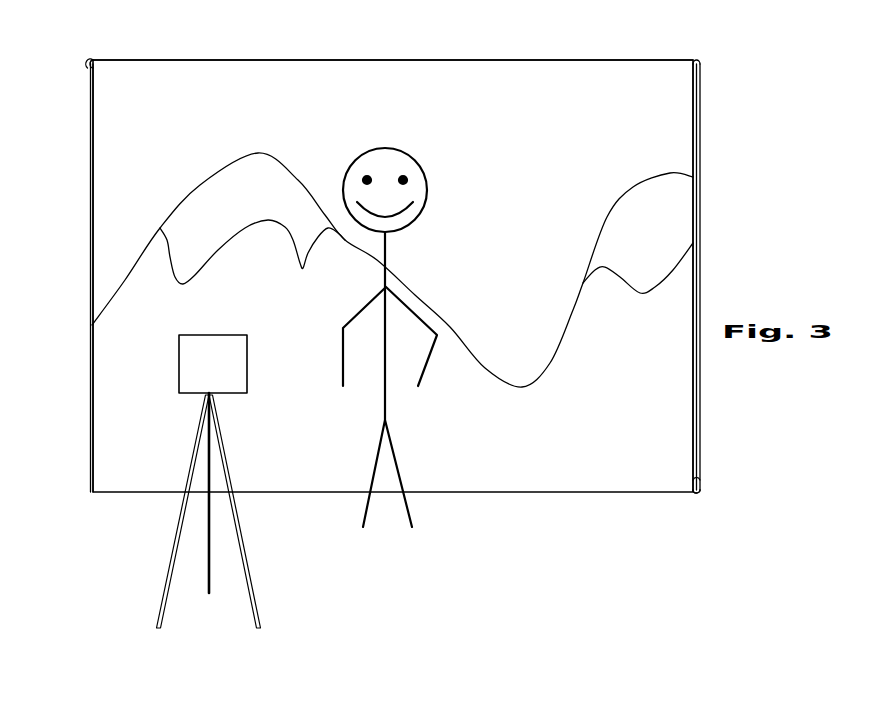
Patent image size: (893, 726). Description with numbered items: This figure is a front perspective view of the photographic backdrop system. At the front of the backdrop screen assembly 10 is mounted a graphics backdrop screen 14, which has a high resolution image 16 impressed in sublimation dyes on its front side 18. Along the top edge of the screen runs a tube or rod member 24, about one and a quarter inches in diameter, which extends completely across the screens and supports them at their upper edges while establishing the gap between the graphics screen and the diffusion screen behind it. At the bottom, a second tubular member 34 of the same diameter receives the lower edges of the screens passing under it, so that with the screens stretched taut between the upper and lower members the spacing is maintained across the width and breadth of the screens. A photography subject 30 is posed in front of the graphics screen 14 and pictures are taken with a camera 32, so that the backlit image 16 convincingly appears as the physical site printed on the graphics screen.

The backdrop screen assembly 10 is at (780, 121).
The graphics backdrop screen 14 is at (101, 127).
The high resolution image 16 is at (230, 203).
The front side 18 is at (526, 77).
The tube or rod member 24 is at (87, 68).
The photography subject 30 is at (415, 162).
The camera 32 is at (226, 378).
The second tubular member 34 is at (698, 483).